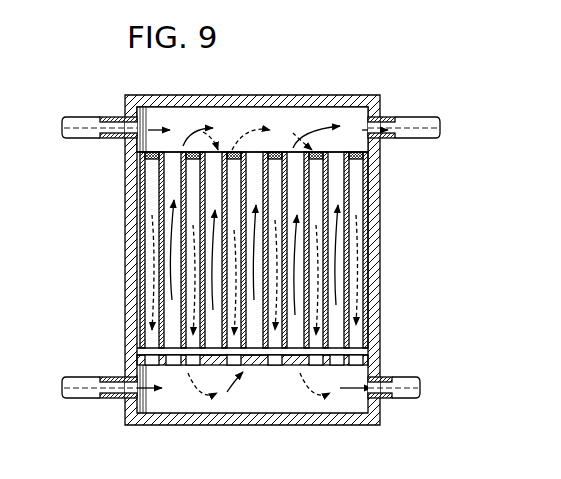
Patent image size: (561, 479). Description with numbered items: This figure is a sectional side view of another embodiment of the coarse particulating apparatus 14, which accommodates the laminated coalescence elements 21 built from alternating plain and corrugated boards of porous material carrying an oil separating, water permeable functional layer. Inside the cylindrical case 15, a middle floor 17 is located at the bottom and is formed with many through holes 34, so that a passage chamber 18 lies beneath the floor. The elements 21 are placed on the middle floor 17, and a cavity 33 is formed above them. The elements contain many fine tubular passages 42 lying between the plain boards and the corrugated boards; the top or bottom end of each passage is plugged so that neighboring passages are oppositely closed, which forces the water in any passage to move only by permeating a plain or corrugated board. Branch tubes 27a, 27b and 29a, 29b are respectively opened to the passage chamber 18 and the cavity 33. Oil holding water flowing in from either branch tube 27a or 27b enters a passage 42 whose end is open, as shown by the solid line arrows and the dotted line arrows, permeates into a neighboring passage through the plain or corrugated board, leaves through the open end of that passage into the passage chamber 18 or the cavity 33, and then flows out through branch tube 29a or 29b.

The coarse particulating apparatus 14 is at (263, 261).
The cylindrical case 15 is at (381, 252).
The middle floor 17 is at (257, 366).
The passage chamber 18 is at (138, 406).
The coarse particulating element 21 is at (150, 260).
The branch tube 27a is at (100, 383).
The branch tube 27b is at (77, 118).
The branch tube 29a is at (435, 120).
The branch tube 29b is at (407, 382).
The cavity 33 is at (289, 118).
The through holes 34 is at (178, 366).
The fine tubular passages 42 is at (312, 162).